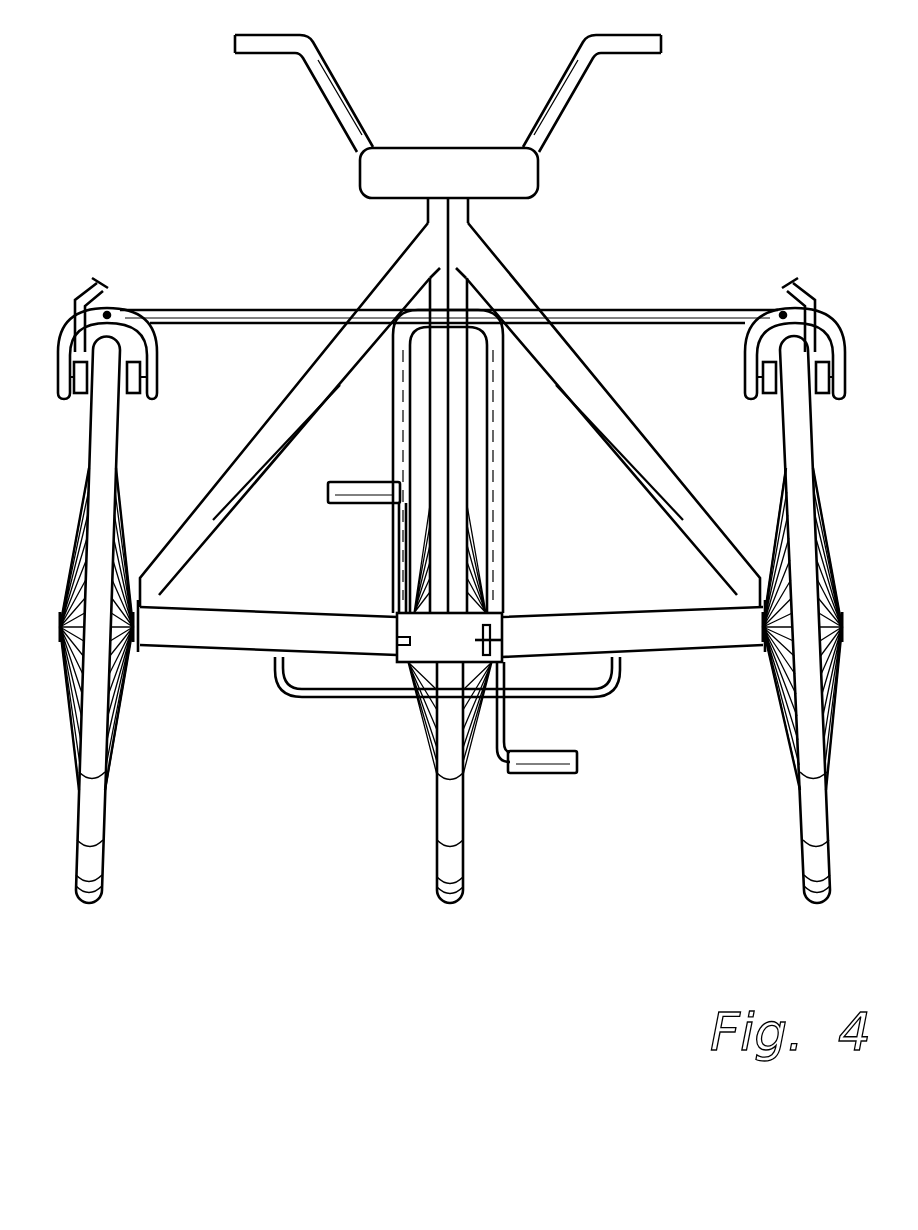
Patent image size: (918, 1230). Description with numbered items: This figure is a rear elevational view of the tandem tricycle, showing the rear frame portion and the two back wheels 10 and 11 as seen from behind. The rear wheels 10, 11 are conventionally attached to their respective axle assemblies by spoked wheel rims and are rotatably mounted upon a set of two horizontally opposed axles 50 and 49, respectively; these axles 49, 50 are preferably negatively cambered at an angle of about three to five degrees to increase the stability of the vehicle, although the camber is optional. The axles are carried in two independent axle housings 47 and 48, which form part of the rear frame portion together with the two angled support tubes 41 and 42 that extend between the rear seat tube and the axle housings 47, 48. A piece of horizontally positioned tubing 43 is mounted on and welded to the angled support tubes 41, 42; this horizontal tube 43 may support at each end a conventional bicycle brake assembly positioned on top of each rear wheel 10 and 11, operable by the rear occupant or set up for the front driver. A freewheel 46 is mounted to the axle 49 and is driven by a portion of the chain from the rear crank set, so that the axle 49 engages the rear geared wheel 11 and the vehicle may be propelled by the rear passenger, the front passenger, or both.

The back wheel 10 is at (103, 458).
The back wheel 11 is at (793, 435).
The angled support tube 41 is at (518, 280).
The angled support tube 42 is at (385, 279).
The horizontally positioned tubing 43 is at (652, 307).
The freewheel 46 is at (490, 650).
The axle housing 47 is at (175, 630).
The axle housing 48 is at (703, 633).
The axle 49 is at (473, 640).
The axle 50 is at (397, 650).